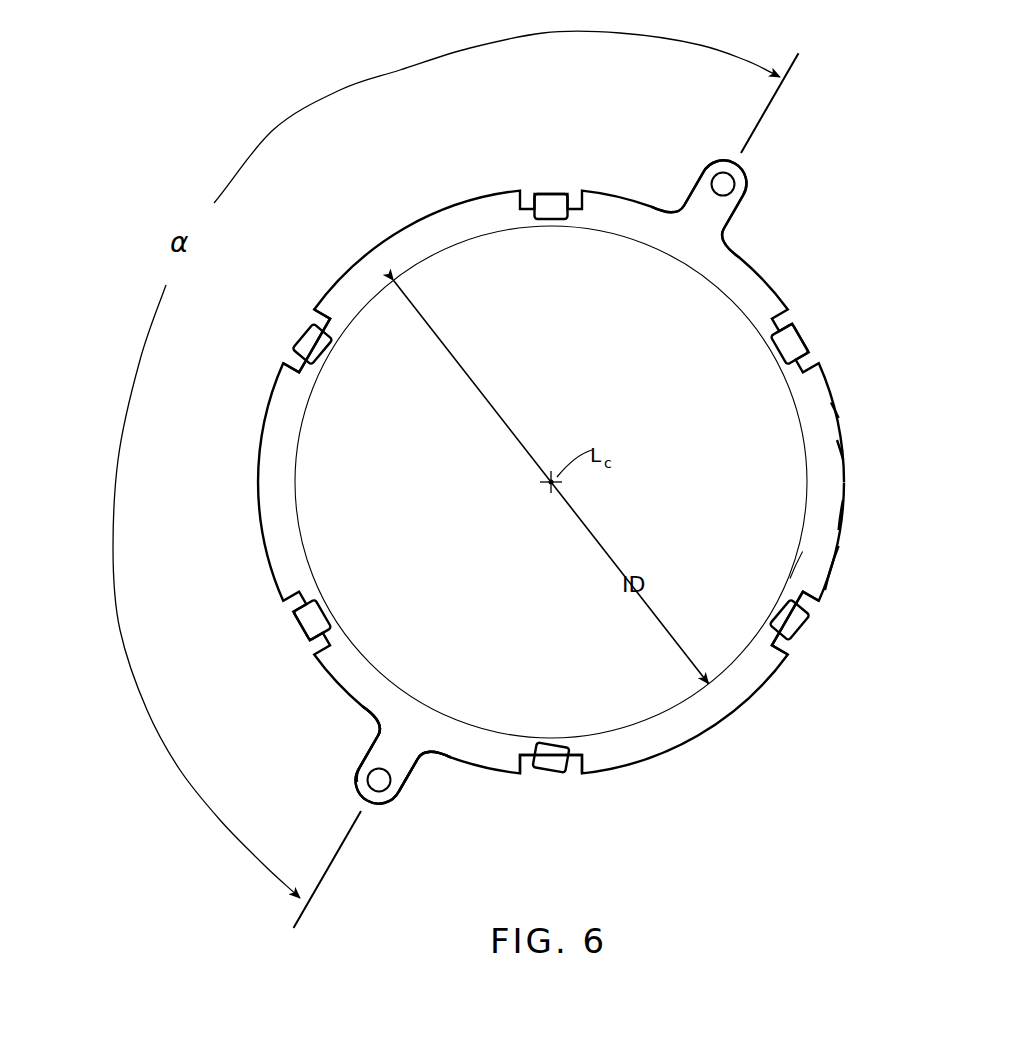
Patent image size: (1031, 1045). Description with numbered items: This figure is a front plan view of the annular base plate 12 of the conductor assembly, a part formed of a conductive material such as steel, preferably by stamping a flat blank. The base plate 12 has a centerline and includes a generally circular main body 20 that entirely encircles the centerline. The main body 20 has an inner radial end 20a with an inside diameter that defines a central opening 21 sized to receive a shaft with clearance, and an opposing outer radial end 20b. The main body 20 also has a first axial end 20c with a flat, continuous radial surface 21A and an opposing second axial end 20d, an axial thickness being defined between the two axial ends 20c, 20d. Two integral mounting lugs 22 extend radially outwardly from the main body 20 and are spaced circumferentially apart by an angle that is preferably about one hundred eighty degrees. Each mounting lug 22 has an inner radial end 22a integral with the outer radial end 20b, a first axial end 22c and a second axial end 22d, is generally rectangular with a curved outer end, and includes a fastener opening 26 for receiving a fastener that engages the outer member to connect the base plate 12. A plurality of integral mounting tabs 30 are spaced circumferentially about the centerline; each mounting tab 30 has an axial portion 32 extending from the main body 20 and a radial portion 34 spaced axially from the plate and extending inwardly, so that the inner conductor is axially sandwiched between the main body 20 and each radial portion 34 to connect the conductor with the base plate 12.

The base plate 12 is at (944, 325).
The main body 20 is at (243, 481).
The inner radial end 20a is at (798, 558).
The outer radial end 20b is at (836, 575).
The first axial end 20c is at (836, 470).
The second axial end 20d is at (838, 508).
The central opening 21 is at (314, 540).
The radial surface 21A is at (838, 437).
The mounting lug 22 is at (754, 162).
The inner radial end 22a is at (405, 738).
The first axial end 22c is at (408, 768).
The second axial end 22d is at (362, 762).
The fastener opening 26 is at (735, 184).
The mounting tab 30 is at (551, 192).
The axial portion 32 is at (300, 340).
The radial portion 34 is at (320, 343).